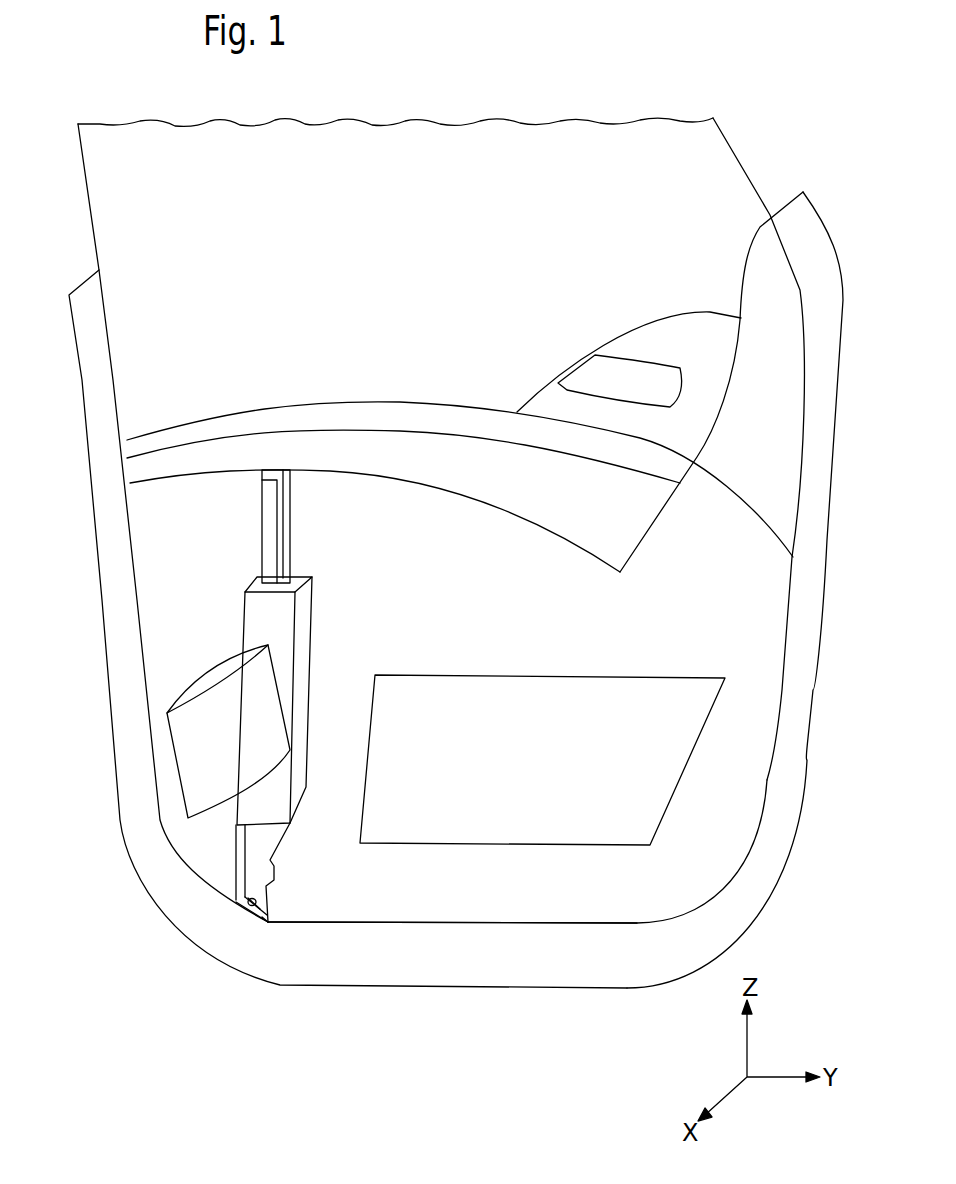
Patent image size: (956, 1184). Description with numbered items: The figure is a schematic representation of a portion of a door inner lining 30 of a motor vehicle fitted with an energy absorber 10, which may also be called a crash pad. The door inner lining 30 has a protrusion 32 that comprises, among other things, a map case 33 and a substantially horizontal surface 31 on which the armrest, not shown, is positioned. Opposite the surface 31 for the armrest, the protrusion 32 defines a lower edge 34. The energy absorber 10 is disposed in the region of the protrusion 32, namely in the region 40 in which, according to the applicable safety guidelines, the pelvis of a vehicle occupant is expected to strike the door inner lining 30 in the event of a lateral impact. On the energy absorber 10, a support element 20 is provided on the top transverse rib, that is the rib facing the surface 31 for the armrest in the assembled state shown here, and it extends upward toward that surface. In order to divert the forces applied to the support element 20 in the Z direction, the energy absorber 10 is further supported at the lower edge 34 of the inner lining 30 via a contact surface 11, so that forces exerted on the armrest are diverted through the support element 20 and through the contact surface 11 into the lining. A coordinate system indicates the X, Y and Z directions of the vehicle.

The energy absorber 10 is at (217, 832).
The contact surface 11 is at (245, 906).
The support element 20 is at (302, 523).
The door inner lining 30 is at (693, 848).
The substantially horizontal surface 31 is at (467, 495).
The protrusion 32 is at (348, 888).
The map case 33 is at (570, 835).
The lower edge 34 is at (268, 922).
The pelvis impact region 40 is at (197, 748).